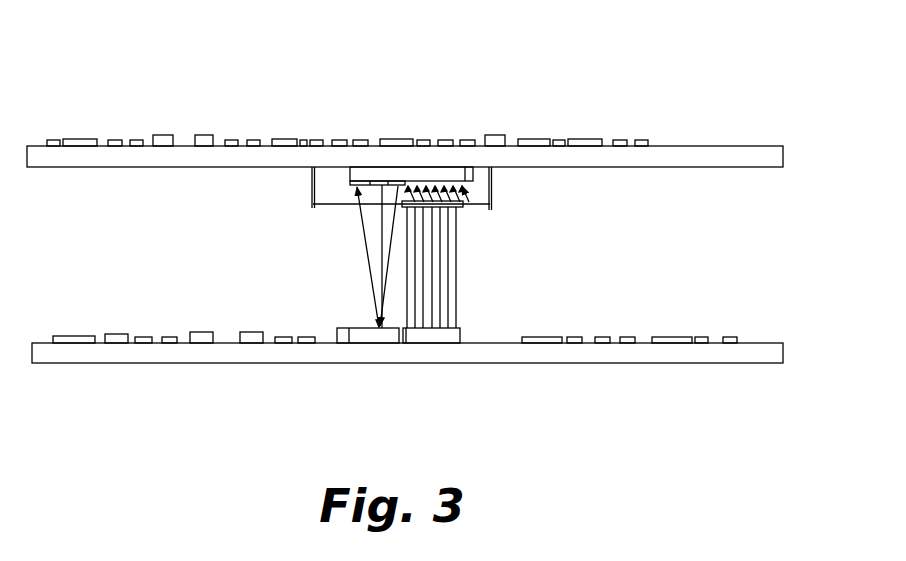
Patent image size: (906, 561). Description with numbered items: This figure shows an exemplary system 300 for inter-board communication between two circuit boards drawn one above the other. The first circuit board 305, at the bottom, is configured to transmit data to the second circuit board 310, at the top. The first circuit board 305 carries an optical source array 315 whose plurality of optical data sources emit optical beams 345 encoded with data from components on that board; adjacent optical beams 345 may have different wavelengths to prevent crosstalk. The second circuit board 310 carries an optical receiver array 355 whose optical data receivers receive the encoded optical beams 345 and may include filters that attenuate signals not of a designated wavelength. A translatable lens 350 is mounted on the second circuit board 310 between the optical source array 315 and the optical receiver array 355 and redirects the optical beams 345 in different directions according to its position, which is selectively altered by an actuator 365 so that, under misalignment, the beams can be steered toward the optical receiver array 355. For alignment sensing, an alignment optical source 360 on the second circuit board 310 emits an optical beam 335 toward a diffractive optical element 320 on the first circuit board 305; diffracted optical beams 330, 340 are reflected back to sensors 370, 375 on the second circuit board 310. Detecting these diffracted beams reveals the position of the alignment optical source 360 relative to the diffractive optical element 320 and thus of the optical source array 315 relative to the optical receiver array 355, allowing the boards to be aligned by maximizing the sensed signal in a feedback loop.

The system for inter-board communication 300 is at (86, 80).
The first circuit board 305 is at (683, 353).
The second circuit board 310 is at (688, 153).
The optical source array 315 is at (422, 332).
The diffractive optical element 320 is at (376, 332).
The diffracted optical beam 330 is at (386, 292).
The optical beam 335 is at (378, 258).
The diffracted optical beam 340 is at (363, 247).
The optical beams 345 is at (457, 310).
The translatable lens 350 is at (452, 208).
The optical receiver array 355 is at (460, 175).
The alignment optical source 360 is at (352, 205).
The actuator 365 is at (309, 200).
The sensor 370 is at (350, 181).
The sensor 375 is at (397, 184).